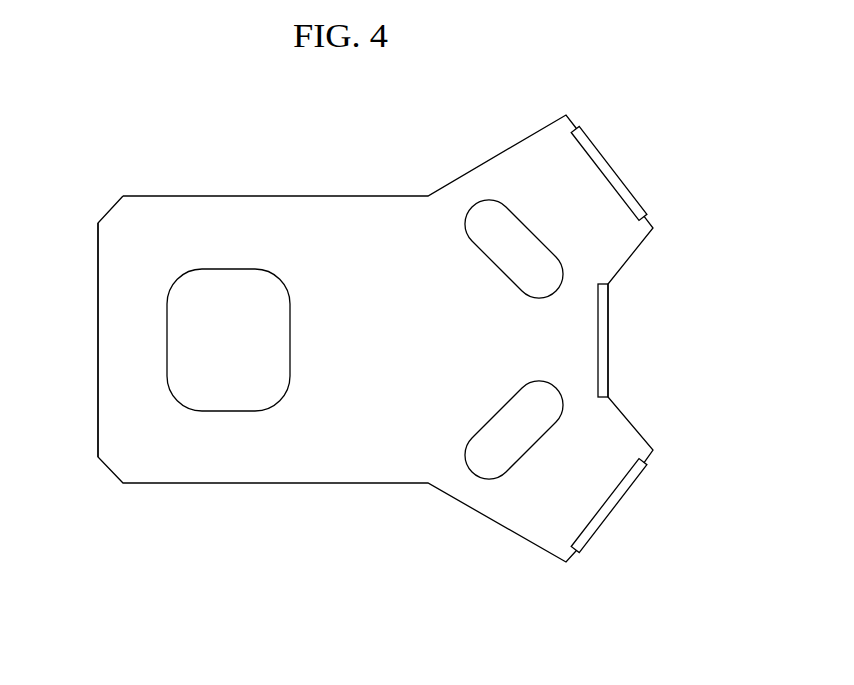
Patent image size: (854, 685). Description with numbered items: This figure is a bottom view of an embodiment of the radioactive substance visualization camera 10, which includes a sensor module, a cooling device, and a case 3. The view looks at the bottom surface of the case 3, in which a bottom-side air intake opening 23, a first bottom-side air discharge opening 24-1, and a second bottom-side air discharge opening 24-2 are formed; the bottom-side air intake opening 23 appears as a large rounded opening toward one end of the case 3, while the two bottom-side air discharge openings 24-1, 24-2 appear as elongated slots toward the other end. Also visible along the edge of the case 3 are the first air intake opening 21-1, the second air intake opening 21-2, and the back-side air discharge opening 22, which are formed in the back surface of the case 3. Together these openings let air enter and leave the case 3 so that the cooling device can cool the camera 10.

The radioactive substance visualization camera 10 is at (354, 130).
The case 3 is at (98, 357).
The bottom-side air intake opening 23 is at (228, 269).
The first bottom-side air discharge opening 24-1 is at (484, 479).
The second bottom-side air discharge opening 24-2 is at (489, 200).
The first air intake opening 21-1 is at (620, 500).
The second air intake opening 21-2 is at (600, 150).
The back-side air discharge opening 22 is at (610, 318).